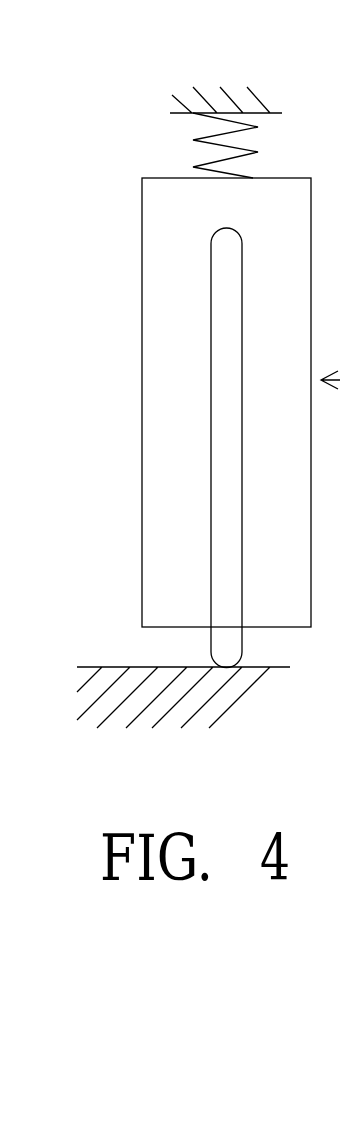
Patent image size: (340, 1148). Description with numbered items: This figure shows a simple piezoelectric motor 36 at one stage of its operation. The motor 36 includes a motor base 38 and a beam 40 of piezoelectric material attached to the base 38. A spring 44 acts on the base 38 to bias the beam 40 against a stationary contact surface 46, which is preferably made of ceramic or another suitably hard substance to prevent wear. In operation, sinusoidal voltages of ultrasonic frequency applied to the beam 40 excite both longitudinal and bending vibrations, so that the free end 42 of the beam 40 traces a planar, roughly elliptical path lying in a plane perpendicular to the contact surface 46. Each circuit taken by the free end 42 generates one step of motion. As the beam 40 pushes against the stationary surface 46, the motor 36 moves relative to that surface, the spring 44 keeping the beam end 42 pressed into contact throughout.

The piezoelectric motor 36 is at (133, 158).
The motor base 38 is at (158, 281).
The beam 40 is at (235, 267).
The free end 42 is at (230, 664).
The spring 44 is at (248, 150).
The contact surface 46 is at (122, 667).